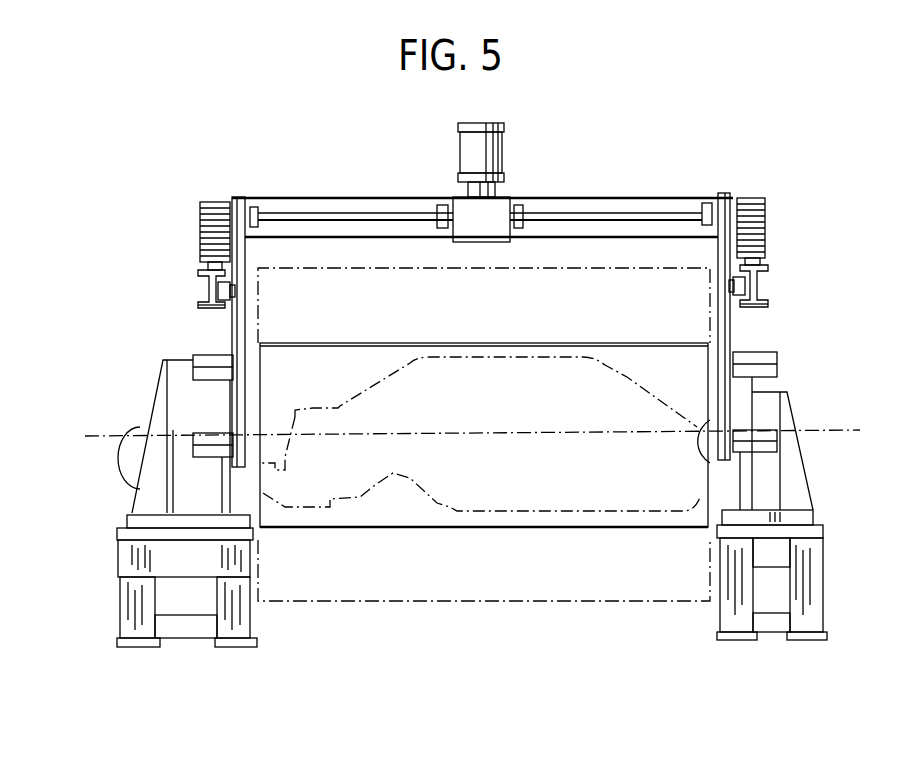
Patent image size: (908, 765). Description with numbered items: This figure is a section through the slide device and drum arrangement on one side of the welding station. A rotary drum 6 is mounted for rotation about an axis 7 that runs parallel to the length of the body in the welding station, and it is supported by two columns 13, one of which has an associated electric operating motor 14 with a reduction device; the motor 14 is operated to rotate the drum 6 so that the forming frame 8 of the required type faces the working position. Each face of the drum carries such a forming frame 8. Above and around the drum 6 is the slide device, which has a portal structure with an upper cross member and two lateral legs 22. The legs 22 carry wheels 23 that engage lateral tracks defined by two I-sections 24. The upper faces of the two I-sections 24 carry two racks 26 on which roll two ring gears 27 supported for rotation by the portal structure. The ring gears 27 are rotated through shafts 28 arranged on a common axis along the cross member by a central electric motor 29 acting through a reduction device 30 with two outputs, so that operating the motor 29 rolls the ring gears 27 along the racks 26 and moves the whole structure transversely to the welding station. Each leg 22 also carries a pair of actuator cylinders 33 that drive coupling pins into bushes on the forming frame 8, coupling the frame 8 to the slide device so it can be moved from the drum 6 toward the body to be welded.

The rotary drum 6 is at (745, 427).
The axis 7 is at (110, 434).
The forming frame 8 is at (588, 268).
The column 13 is at (120, 521).
The electric operating motor 14 is at (127, 463).
The lateral leg 22 is at (239, 306).
The wheel 23 is at (218, 293).
The I-section 24 is at (220, 304).
The rack 26 is at (202, 258).
The ring gear 27 is at (213, 212).
The shaft 28 is at (375, 216).
The central electric motor 29 is at (507, 157).
The reduction device 30 is at (488, 227).
The actuator cylinder 33 is at (213, 374).